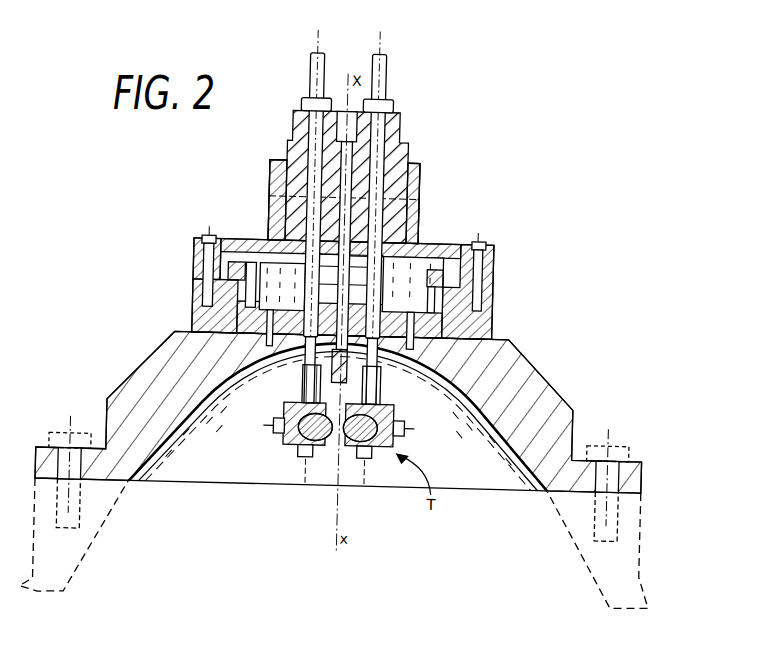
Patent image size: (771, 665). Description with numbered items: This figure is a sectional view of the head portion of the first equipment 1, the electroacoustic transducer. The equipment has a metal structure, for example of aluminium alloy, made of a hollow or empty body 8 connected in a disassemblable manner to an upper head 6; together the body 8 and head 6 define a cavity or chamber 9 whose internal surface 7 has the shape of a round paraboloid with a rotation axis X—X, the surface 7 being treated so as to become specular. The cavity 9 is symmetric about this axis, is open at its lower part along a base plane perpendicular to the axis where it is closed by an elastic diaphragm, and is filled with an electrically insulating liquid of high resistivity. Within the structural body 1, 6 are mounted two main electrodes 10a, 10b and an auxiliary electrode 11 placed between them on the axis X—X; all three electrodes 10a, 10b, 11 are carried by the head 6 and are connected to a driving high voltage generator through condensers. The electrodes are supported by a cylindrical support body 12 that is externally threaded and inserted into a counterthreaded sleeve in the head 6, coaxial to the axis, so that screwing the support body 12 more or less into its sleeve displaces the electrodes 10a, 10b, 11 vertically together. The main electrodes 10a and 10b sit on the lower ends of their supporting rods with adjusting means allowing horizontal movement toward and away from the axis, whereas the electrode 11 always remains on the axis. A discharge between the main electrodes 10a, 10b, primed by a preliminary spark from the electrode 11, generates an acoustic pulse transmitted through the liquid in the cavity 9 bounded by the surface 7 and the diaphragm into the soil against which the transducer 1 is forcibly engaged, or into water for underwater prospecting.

The first equipment 1 is at (560, 376).
The upper head 6 is at (519, 360).
The paraboloidic surface 7 is at (452, 394).
The hollow body 8 is at (639, 573).
The cavity or chamber 9 is at (225, 539).
The main electrode 10a is at (330, 450).
The main electrode 10b is at (349, 450).
The auxiliary electrode 11 is at (300, 386).
The cylindrical support body 12 is at (388, 170).